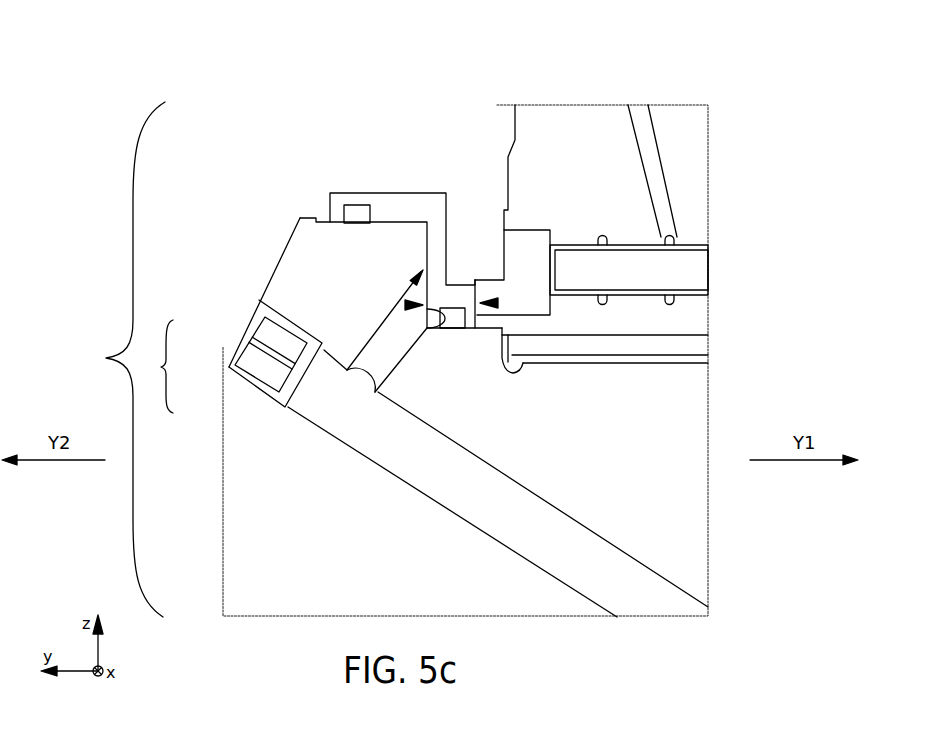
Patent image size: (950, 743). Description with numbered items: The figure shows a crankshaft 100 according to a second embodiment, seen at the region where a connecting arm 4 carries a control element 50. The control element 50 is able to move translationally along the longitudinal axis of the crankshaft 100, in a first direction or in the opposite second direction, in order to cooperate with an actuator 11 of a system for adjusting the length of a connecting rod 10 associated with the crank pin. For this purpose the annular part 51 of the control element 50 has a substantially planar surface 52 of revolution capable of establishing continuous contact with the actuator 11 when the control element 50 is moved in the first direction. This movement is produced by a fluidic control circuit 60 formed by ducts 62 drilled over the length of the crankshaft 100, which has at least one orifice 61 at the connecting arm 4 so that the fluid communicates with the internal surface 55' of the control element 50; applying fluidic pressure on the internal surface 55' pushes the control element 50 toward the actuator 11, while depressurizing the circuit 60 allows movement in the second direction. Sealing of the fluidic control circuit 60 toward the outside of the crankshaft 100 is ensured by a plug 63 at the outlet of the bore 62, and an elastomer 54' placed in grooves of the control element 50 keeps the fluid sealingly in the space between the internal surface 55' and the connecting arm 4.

The crankshaft 100 is at (115, 359).
The connecting rod 10 is at (582, 132).
The actuator 11 is at (488, 290).
The connecting arm 4 is at (295, 527).
The control element 50 is at (418, 218).
The annular part 51 is at (458, 293).
The planar surface 52 is at (498, 303).
The elastomer 54' is at (353, 253).
The internal surface 55' is at (358, 294).
The fluidic control circuit 60 is at (230, 356).
The orifice 61 is at (405, 311).
The duct 62 is at (352, 413).
The plug 63 is at (262, 350).